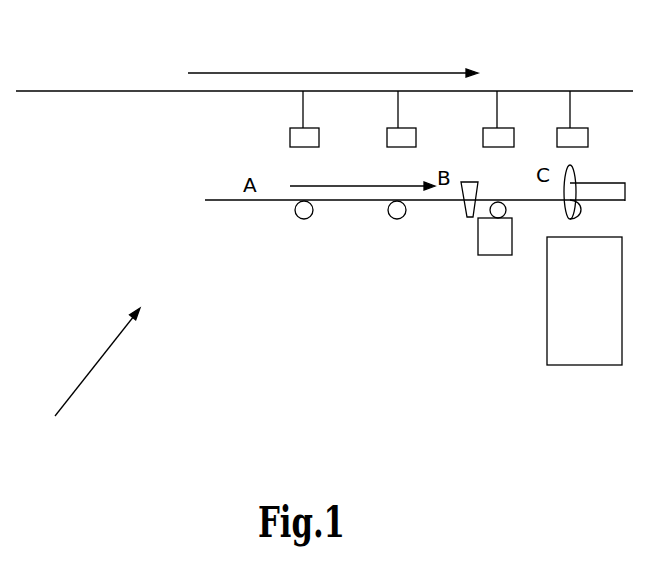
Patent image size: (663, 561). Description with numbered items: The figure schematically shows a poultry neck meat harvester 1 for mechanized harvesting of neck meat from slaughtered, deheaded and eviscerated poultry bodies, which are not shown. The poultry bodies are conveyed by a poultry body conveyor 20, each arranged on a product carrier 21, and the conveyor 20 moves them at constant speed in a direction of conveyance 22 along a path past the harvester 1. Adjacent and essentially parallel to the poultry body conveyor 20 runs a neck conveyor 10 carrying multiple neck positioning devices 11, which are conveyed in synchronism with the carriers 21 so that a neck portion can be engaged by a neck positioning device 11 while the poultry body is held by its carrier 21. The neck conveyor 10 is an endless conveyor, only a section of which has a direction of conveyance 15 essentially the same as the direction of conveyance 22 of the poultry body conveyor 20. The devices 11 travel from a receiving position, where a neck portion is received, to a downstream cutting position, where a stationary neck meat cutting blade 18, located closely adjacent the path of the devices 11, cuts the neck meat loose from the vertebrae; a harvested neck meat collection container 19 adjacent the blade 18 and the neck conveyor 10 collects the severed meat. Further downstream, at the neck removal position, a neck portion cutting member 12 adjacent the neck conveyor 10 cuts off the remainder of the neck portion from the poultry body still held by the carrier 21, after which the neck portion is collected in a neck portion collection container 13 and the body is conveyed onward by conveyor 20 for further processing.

The poultry neck meat harvester 1 is at (91, 369).
The neck conveyor 10 is at (223, 210).
The neck positioning devices 11 is at (478, 219).
The neck portion cutting member 12 is at (592, 195).
The neck portion collection container 13 is at (558, 345).
The direction of conveyance 15 is at (383, 185).
The neck meat cutting blade 18 is at (477, 198).
The harvested neck meat collection container 19 is at (493, 238).
The poultry body conveyor 20 is at (87, 90).
The product carrier 21 is at (297, 133).
The direction of conveyance 22 is at (292, 72).